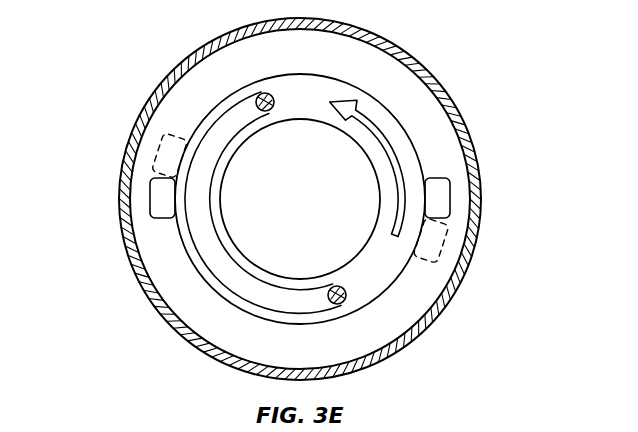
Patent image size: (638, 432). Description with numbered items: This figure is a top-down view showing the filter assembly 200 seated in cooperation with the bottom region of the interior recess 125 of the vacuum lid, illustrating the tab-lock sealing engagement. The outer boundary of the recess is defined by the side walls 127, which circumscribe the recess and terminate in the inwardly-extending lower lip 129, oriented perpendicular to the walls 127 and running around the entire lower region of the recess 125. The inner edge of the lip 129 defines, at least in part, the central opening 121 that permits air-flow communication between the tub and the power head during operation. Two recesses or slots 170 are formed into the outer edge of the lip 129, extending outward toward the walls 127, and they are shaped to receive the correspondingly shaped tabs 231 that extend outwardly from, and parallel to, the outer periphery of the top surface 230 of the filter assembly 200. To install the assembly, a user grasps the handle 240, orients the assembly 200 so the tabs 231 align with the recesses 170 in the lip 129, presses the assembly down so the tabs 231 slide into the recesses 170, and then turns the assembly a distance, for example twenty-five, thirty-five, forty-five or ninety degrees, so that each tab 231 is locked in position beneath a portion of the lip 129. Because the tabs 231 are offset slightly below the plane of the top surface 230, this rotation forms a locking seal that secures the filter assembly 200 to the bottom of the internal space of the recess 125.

The central opening 121 is at (270, 180).
The interior recess 125 is at (402, 352).
The side walls 127 is at (300, 199).
The inwardly-extending lower lip 129 is at (248, 60).
The recess or slot 170 is at (166, 198).
The filter assembly 200 is at (398, 285).
The top surface 230 is at (400, 253).
The tab 231 is at (112, 211).
The handle 240 is at (276, 98).